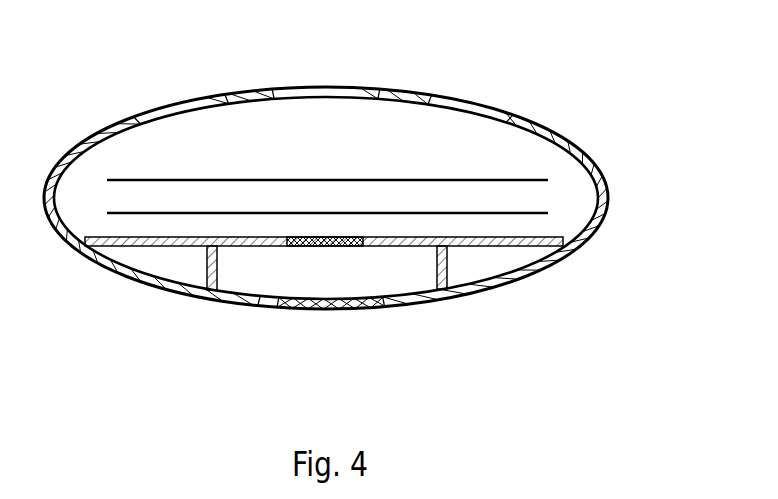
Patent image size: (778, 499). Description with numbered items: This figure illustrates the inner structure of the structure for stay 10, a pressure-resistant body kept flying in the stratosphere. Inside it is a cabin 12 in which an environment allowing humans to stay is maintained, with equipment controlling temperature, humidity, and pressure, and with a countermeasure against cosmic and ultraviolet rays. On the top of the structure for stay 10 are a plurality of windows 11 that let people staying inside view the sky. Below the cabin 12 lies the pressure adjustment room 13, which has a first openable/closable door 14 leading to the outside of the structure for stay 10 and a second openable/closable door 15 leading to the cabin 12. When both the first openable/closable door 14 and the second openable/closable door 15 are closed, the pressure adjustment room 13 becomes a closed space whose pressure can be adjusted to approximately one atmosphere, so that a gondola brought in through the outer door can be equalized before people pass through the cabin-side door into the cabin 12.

The structure for stay 10 is at (602, 80).
The windows 11 is at (342, 94).
The cabin 12 is at (197, 143).
The pressure adjustment room 13 is at (388, 268).
The first openable/closable door 14 is at (308, 308).
The second openable/closable door 15 is at (310, 242).